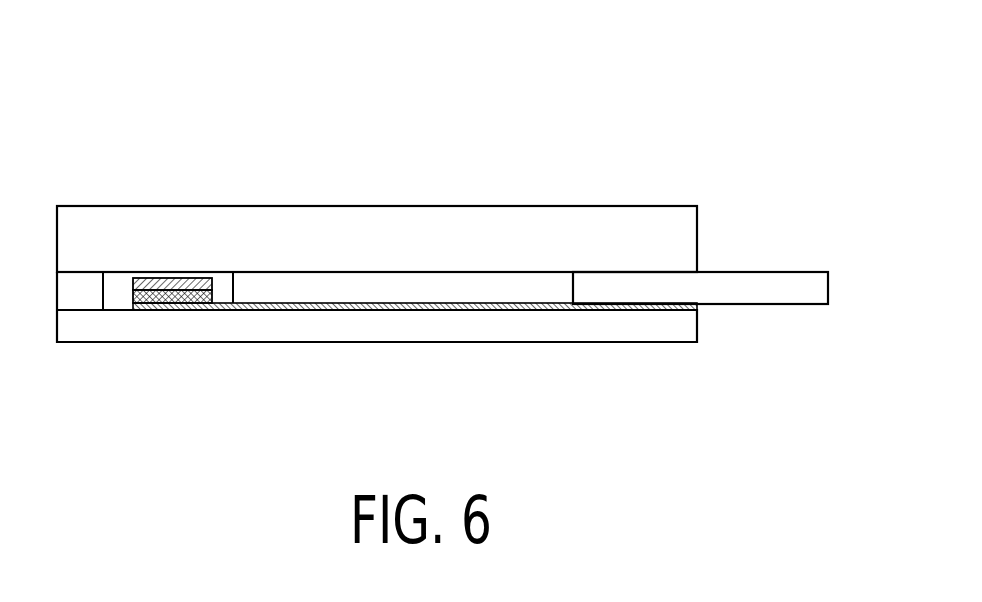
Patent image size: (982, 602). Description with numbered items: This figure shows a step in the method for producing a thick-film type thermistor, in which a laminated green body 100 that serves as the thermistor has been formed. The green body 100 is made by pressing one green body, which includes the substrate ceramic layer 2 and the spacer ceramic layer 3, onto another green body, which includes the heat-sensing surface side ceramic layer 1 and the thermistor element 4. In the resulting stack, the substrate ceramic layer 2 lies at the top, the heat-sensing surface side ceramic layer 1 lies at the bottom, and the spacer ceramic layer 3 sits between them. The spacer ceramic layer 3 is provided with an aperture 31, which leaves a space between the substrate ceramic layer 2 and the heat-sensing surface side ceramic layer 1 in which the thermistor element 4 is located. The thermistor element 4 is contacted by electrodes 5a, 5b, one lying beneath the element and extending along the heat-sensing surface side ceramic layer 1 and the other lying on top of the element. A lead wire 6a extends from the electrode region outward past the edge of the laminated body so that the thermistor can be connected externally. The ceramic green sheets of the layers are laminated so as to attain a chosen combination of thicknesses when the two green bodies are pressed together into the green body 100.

The green body 100 is at (385, 178).
The substrate ceramic layer 2 is at (583, 206).
The heat-sensing surface side ceramic layer 1 is at (610, 342).
The aperture 31 is at (121, 300).
The electrode 5b is at (173, 278).
The thermistor element 4 is at (213, 293).
The spacer ceramic layer 3 is at (338, 292).
The electrode 5a is at (527, 310).
The lead wire 6a is at (740, 272).